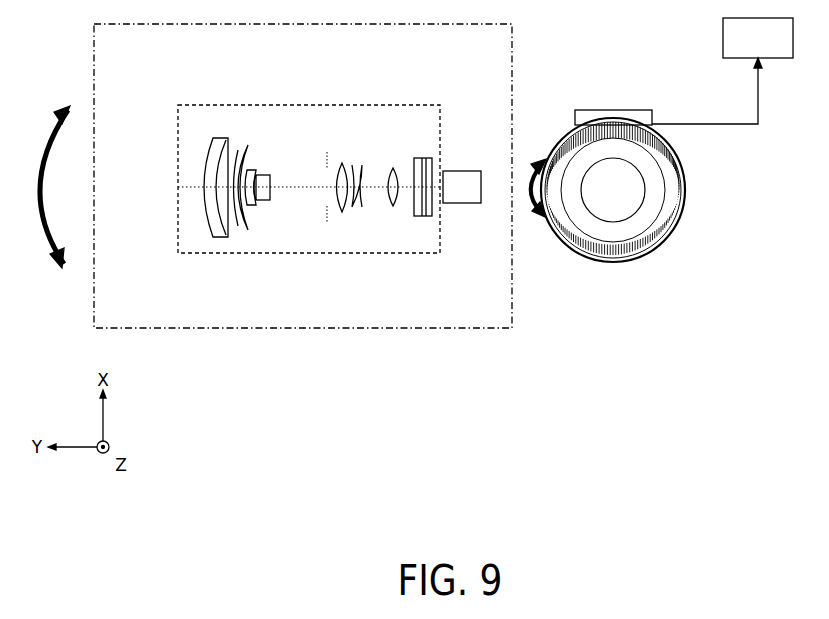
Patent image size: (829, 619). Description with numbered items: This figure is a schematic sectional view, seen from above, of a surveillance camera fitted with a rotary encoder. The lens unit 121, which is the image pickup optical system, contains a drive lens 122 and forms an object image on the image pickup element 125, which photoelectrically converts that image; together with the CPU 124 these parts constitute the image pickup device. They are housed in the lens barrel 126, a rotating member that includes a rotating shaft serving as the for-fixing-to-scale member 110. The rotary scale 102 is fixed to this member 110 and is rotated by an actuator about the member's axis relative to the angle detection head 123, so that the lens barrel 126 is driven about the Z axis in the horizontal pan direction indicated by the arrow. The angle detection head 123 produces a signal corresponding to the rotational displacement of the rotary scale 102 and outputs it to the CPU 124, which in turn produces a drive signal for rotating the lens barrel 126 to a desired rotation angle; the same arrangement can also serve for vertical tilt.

The rotary scale 102 is at (684, 168).
The for-fixing-to-scale member 110 is at (632, 215).
The lens unit 121 is at (190, 138).
The drive lens 122 is at (270, 175).
The angle detection head 123 is at (618, 110).
The CPU 124 is at (780, 47).
The image pickup element 125 is at (458, 203).
The lens barrel 126 is at (278, 318).